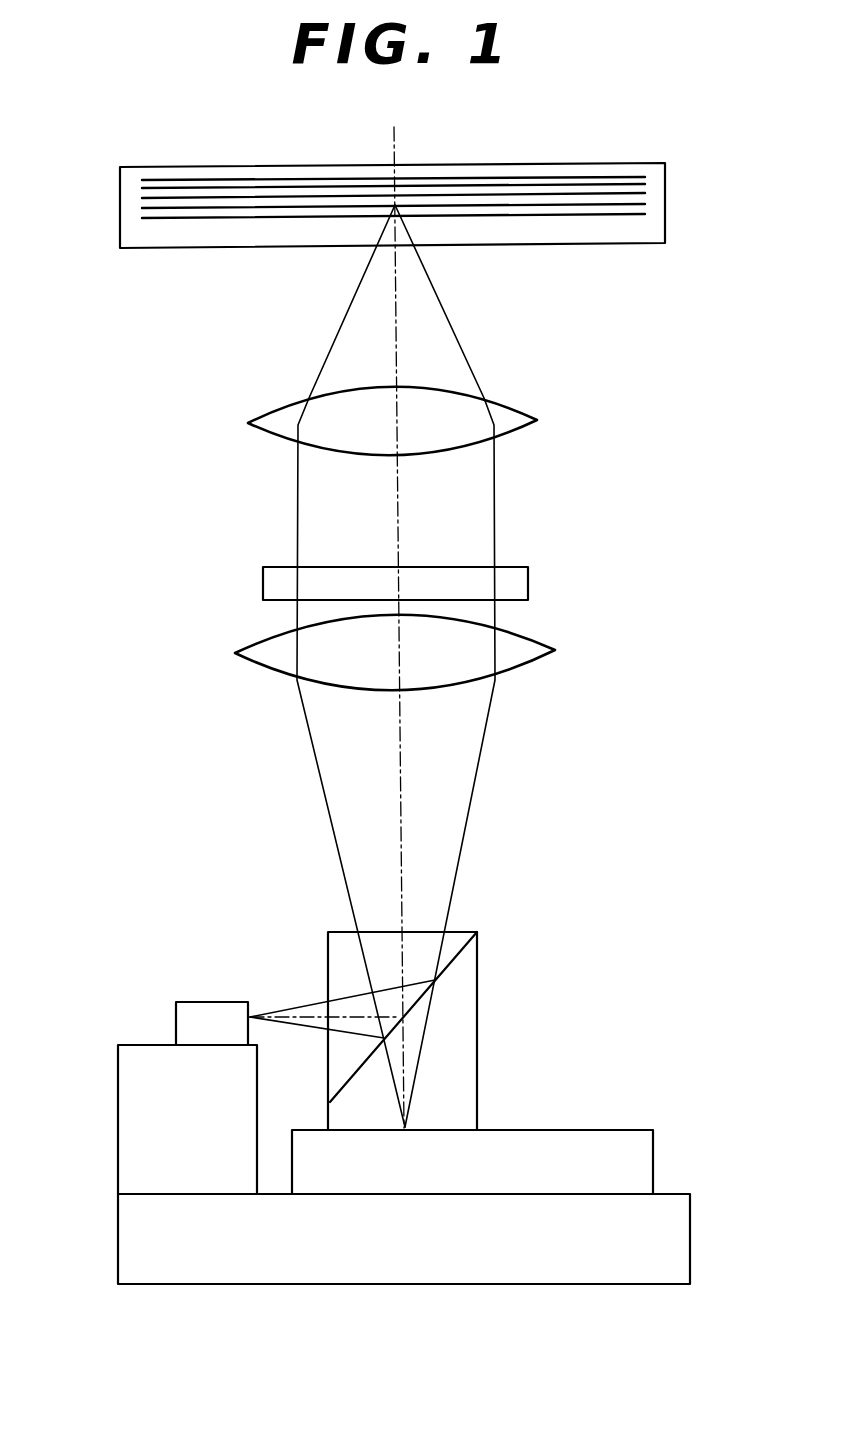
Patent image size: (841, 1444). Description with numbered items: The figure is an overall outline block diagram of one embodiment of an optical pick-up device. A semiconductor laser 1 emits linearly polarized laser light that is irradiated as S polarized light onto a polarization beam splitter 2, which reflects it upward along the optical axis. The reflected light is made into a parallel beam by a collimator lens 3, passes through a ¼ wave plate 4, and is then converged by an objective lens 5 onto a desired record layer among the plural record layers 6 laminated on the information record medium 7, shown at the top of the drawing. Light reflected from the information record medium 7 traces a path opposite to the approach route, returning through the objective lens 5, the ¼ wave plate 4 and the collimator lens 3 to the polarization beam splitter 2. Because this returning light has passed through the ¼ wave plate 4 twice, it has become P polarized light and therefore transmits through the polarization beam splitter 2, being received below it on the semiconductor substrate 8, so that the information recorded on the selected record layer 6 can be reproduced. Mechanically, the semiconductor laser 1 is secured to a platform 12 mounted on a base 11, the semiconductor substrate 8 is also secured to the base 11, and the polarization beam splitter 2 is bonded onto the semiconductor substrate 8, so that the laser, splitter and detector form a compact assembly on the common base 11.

The semiconductor laser 1 is at (218, 1012).
The polarization beam splitter 2 is at (458, 1032).
The collimator lens 3 is at (515, 657).
The ¼ wave plate 4 is at (512, 577).
The objective lens 5 is at (508, 418).
The record layers 6 is at (627, 202).
The information record medium 7 is at (587, 160).
The semiconductor substrate 8 is at (603, 1150).
The base 11 is at (640, 1230).
The platform 12 is at (165, 1142).